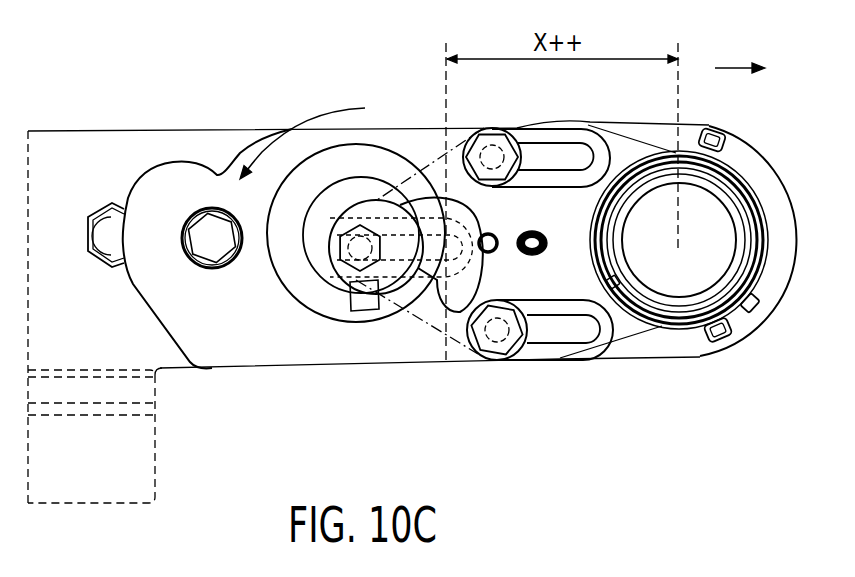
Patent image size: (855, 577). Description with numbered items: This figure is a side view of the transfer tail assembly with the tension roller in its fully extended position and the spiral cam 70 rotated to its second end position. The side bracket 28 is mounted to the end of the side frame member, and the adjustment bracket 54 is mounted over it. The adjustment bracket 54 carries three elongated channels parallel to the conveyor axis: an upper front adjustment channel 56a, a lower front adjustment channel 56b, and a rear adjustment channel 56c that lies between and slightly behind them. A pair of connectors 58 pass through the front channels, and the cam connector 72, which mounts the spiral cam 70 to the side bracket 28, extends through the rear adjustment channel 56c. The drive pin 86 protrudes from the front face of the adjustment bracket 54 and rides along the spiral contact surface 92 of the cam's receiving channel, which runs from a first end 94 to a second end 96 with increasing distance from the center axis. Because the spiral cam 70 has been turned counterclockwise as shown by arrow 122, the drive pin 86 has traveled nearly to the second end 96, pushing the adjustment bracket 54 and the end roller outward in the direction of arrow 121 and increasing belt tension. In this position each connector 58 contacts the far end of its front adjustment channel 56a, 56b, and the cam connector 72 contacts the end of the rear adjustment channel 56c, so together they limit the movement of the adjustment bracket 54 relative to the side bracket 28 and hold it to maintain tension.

The side bracket 28 is at (238, 350).
The adjustment bracket 54 is at (634, 328).
The upper front adjustment channel 56a is at (563, 148).
The lower front adjustment channel 56b is at (557, 333).
The rear adjustment channel 56c is at (442, 272).
The connectors 58 is at (505, 130).
The spiral cam 70 is at (287, 273).
The cam connector 72 is at (305, 310).
The drive pin 86 is at (492, 232).
The spiral contact surface 92 is at (407, 143).
The first end 94 is at (313, 238).
The second end 96 is at (478, 278).
The arrow 121 is at (735, 67).
The arrow 122 is at (330, 112).